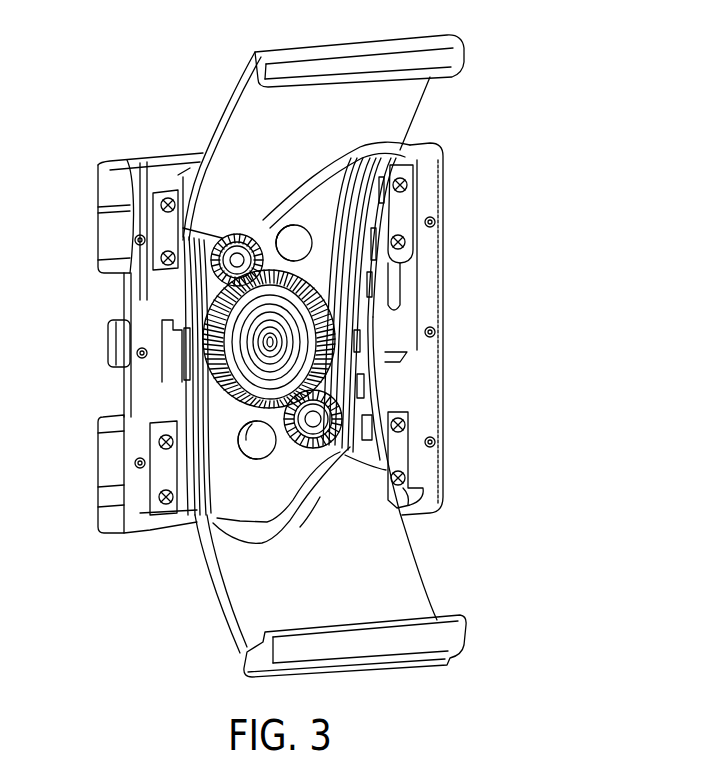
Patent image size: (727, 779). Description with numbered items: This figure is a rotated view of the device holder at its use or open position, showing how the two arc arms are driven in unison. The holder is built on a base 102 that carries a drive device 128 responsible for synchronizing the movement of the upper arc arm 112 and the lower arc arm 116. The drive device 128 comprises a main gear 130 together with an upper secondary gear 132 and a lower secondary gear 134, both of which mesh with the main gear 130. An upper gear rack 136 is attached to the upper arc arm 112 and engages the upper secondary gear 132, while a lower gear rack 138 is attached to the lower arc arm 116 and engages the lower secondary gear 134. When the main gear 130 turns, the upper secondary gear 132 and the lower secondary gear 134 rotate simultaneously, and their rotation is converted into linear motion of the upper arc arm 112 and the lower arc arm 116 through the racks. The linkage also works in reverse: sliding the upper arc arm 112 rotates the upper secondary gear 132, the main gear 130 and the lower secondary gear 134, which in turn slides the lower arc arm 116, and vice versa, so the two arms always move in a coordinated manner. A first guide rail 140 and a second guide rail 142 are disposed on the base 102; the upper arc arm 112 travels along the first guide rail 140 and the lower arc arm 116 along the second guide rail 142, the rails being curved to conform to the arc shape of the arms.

The base 102 is at (444, 237).
The upper arc arm 112 is at (228, 101).
The lower arc arm 116 is at (417, 563).
The drive device 128 is at (216, 326).
The main gear 130 is at (222, 410).
The upper secondary gear 132 is at (216, 254).
The lower secondary gear 134 is at (346, 463).
The upper gear rack 136 is at (219, 265).
The lower gear rack 138 is at (358, 393).
The first guide rail 140 is at (200, 350).
The second guide rail 142 is at (353, 371).